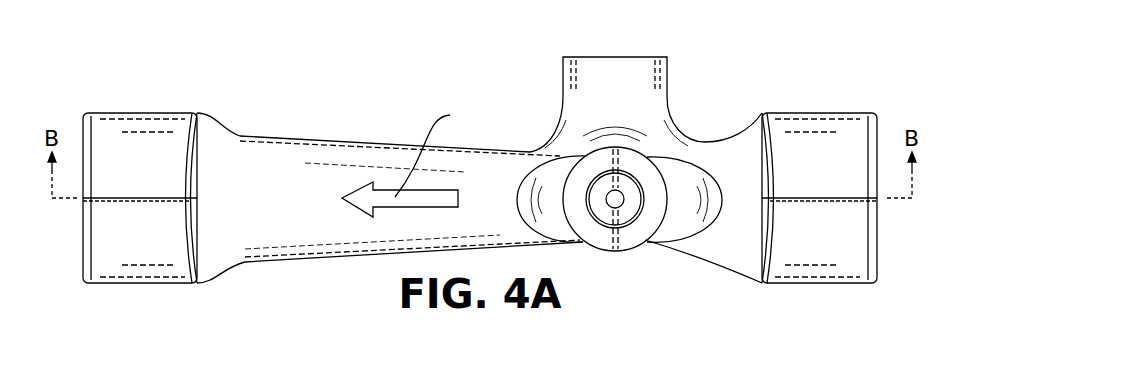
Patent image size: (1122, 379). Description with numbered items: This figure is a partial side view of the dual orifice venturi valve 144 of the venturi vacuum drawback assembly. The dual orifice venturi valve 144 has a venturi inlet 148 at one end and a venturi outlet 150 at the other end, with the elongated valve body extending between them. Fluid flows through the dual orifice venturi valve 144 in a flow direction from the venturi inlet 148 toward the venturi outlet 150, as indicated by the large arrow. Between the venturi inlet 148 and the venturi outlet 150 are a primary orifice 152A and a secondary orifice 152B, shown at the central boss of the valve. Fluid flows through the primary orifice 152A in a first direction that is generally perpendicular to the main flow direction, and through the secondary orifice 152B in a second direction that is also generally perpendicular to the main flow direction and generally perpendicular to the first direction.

The dual orifice venturi valve 144 is at (320, 100).
The primary orifice 152A is at (665, 50).
The secondary orifice 152B is at (621, 202).
The venturi outlet 150 is at (83, 265).
The venturi inlet 148 is at (877, 265).